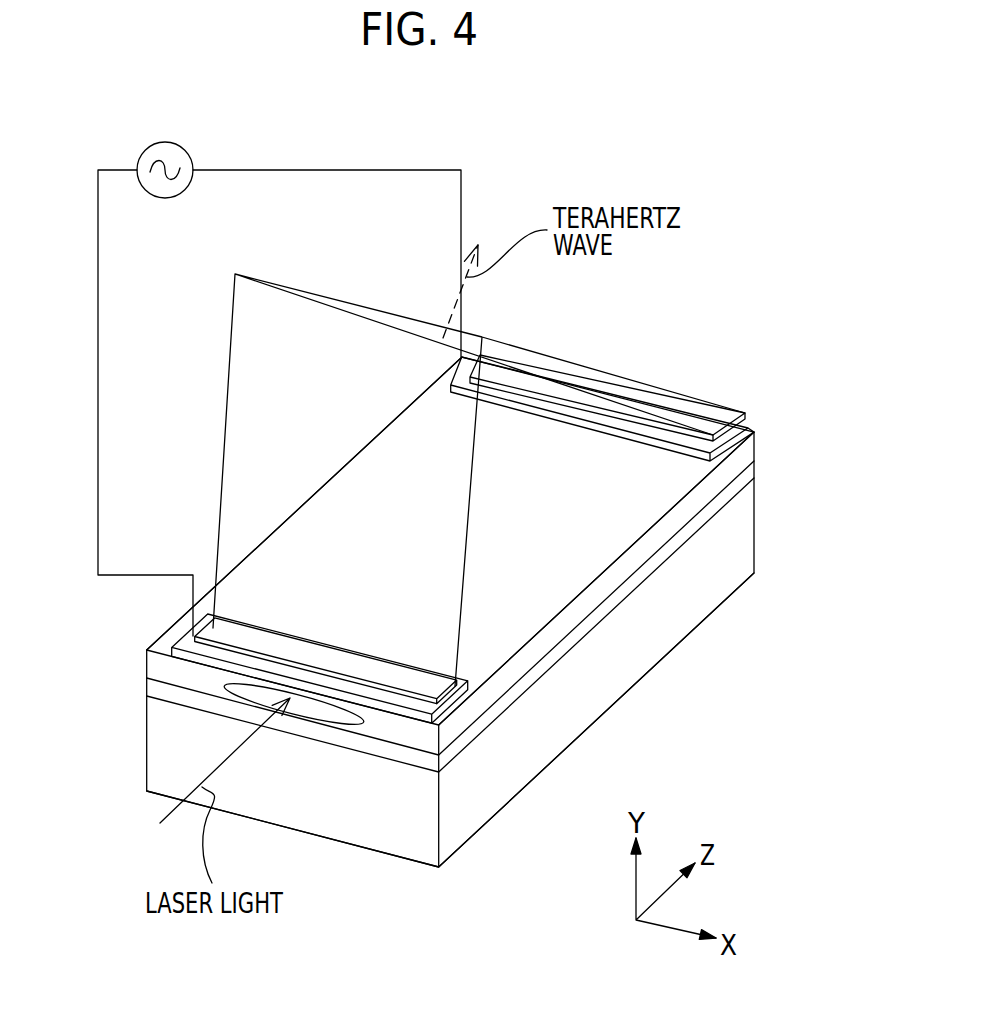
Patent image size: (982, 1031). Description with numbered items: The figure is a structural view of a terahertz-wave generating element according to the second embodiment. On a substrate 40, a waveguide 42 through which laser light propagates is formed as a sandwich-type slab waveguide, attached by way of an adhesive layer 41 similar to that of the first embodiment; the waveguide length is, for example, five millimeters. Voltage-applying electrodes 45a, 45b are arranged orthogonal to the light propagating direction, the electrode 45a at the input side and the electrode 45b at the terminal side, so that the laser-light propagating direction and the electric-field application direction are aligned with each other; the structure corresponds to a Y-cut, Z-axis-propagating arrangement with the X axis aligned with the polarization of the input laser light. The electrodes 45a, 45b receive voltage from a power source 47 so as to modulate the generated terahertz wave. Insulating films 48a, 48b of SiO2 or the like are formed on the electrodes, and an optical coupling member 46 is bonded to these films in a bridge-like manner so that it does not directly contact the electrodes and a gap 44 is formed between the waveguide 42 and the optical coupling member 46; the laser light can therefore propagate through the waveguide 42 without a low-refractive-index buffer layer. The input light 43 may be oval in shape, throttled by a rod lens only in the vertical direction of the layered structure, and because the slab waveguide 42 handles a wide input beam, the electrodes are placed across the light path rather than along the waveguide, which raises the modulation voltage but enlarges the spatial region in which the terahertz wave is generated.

The substrate 40 is at (620, 683).
The adhesive layer 41 is at (376, 750).
The waveguide 42 is at (418, 742).
The input light 43 is at (352, 726).
The gap 44 is at (637, 527).
The electrode 45a is at (160, 637).
The electrode 45b is at (487, 356).
The optical coupling member 46 is at (312, 335).
The power source 47 is at (164, 142).
The insulating film 48a is at (224, 647).
The insulating film 48b is at (686, 408).